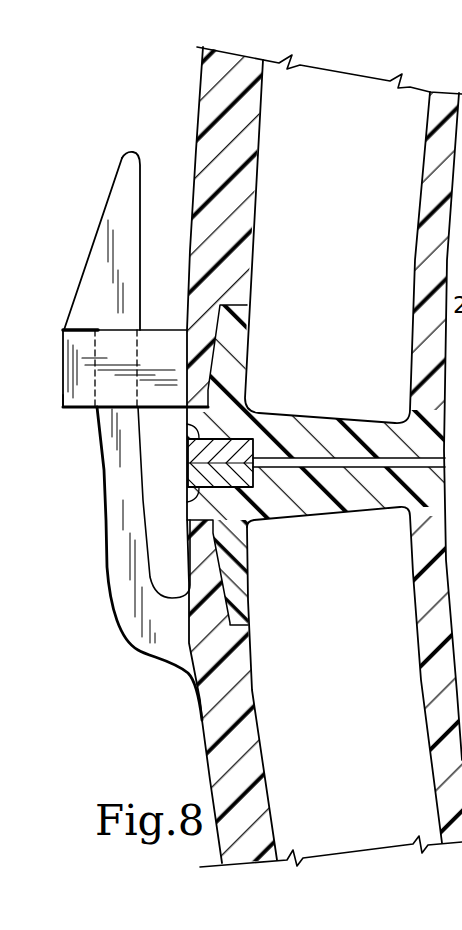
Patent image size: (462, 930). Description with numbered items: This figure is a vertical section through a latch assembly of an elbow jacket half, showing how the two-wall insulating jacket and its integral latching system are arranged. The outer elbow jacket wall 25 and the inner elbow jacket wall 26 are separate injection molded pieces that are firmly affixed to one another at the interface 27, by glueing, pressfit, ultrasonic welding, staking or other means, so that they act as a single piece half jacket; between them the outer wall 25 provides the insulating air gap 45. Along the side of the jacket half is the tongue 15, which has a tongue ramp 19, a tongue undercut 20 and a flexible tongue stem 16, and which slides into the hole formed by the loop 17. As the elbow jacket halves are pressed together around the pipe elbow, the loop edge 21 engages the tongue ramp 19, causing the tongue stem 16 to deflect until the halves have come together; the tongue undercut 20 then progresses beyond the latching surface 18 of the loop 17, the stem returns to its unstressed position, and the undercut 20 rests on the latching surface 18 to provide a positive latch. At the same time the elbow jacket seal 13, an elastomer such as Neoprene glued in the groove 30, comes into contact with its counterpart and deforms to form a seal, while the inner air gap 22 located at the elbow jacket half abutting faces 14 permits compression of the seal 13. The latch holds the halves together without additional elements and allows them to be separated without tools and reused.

The elbow jacket seal 13 is at (184, 465).
The elbow jacket half abutting face 14 is at (348, 468).
The tongue 15 is at (118, 198).
The tongue stem 16 is at (106, 462).
The loop 17 is at (147, 347).
The latching surface 18 is at (82, 333).
The tongue ramp 19 is at (95, 228).
The tongue undercut 20 is at (73, 328).
The loop edge 21 is at (77, 409).
The inner air gap 22 is at (290, 470).
The outer elbow jacket wall 25 is at (203, 82).
The inner elbow jacket wall 26 is at (428, 137).
The interface 27 is at (218, 348).
The groove 30 is at (190, 428).
The air gap 45 is at (347, 285).